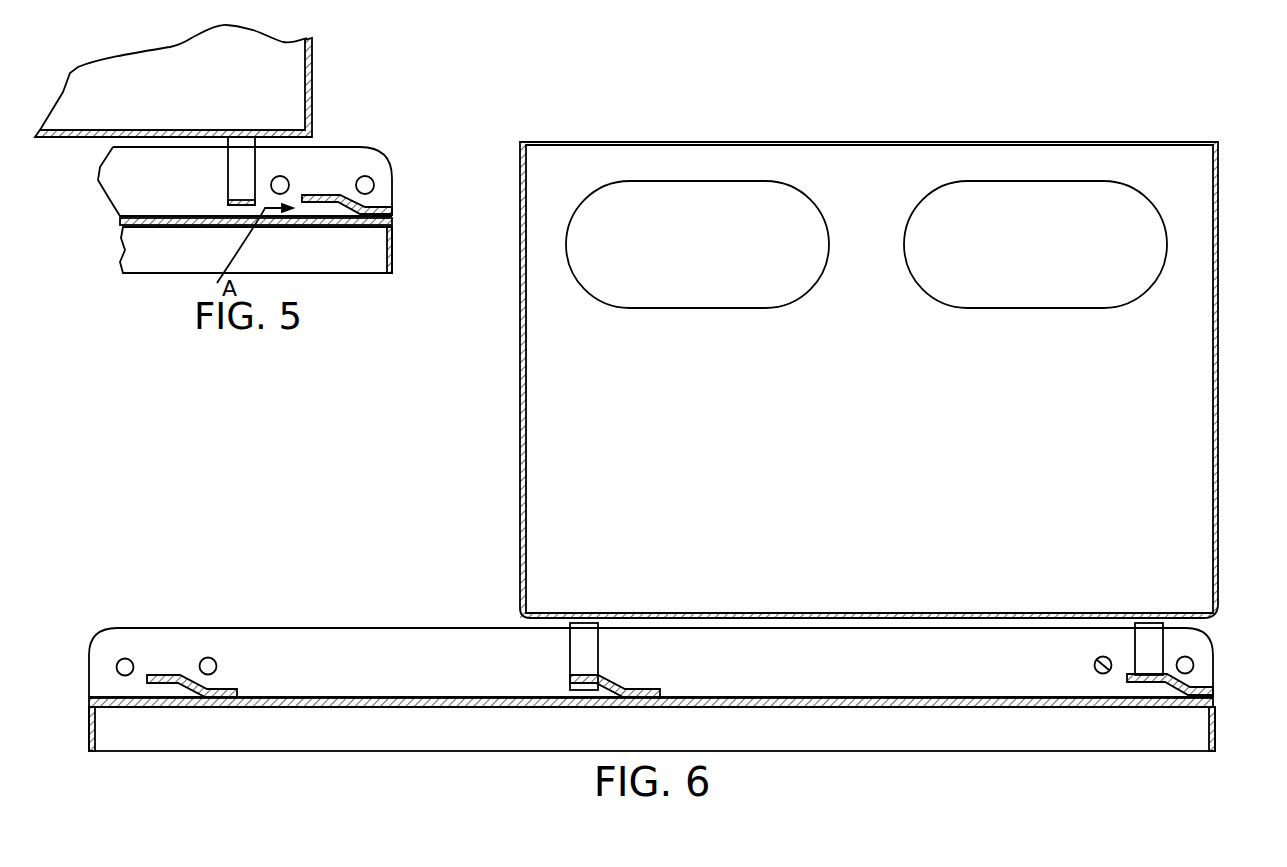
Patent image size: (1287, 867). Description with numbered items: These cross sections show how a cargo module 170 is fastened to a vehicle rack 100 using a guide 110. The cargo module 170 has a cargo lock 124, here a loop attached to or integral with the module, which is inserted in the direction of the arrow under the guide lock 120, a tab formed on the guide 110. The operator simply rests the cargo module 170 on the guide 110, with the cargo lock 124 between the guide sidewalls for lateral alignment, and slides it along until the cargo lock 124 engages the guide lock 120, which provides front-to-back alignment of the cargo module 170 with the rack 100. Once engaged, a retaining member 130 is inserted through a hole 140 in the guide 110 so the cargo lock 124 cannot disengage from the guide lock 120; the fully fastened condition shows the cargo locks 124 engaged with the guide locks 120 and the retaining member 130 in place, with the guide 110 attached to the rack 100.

In FIG. 5, the rack 100 is at (398, 250).
In FIG. 6, the rack 100 is at (1223, 730).
In FIG. 5, the guide 110 is at (345, 140).
In FIG. 6, the guide 110 is at (355, 620).
In FIG. 5, the guide lock 120 is at (372, 225).
In FIG. 6, the guide lock 120 is at (218, 699).
In FIG. 5, the cargo lock 124 is at (241, 172).
In FIG. 6, the cargo lock 124 is at (584, 653).
In FIG. 6, the retaining member 130 is at (1095, 663).
In FIG. 5, the hole 140 is at (285, 183).
In FIG. 6, the hole 140 is at (131, 665).
In FIG. 5, the cargo module 170 is at (223, 93).
In FIG. 6, the cargo module 170 is at (855, 442).